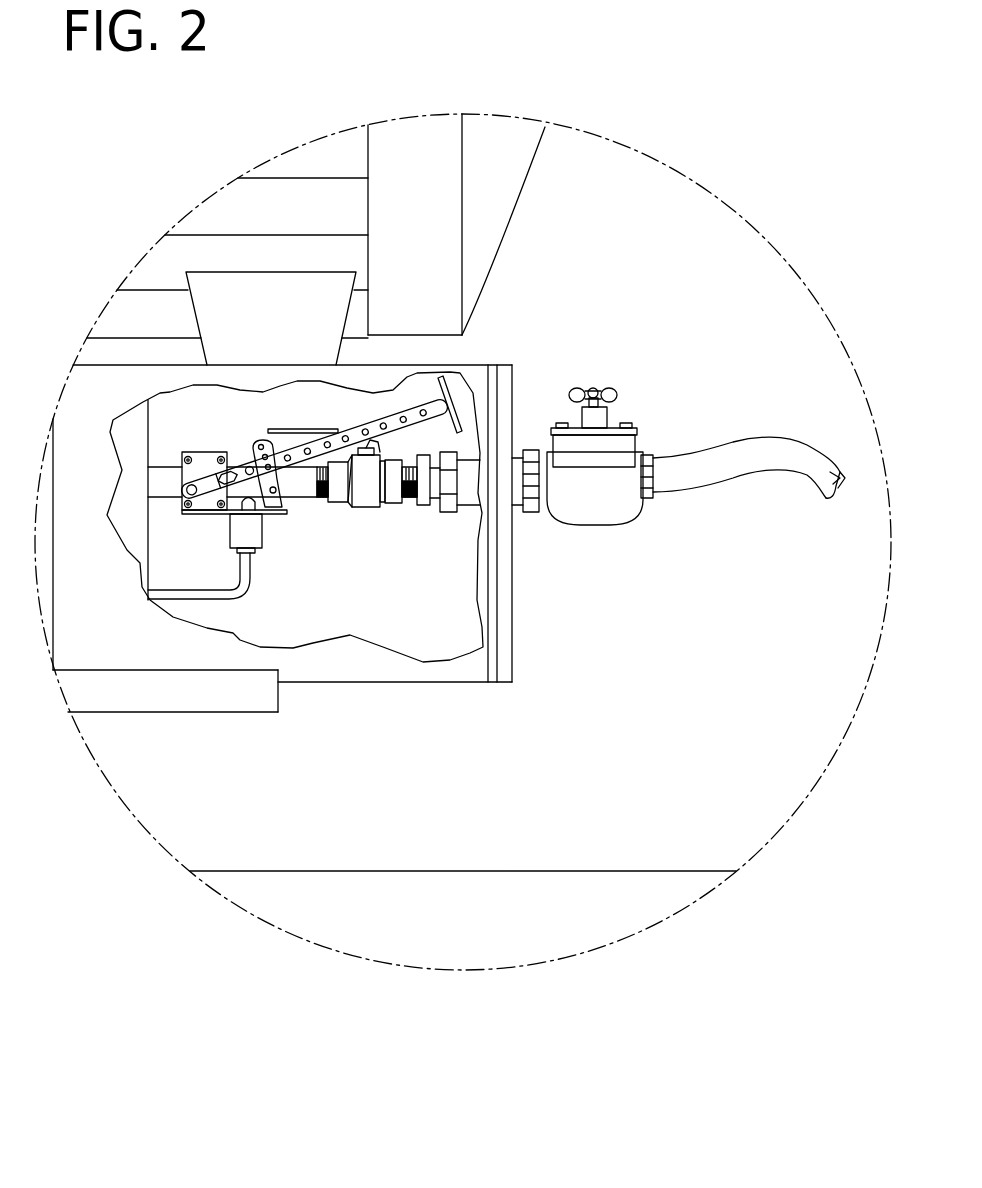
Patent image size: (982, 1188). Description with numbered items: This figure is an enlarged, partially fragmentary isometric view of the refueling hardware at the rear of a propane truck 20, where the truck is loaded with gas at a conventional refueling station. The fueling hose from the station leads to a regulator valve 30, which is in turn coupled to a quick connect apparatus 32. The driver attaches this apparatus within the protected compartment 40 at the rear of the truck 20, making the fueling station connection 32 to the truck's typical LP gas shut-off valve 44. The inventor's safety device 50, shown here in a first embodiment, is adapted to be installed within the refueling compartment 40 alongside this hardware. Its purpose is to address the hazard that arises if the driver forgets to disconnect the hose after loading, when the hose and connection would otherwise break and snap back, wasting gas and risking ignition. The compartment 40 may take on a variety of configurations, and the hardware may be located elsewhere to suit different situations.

The propane truck 20 is at (557, 233).
The regulator valve 30 is at (603, 503).
The quick connect apparatus 32 is at (440, 609).
The protected compartment 40 is at (270, 729).
The LP gas shut-off valve 44 is at (408, 520).
The safety device 50 is at (236, 418).